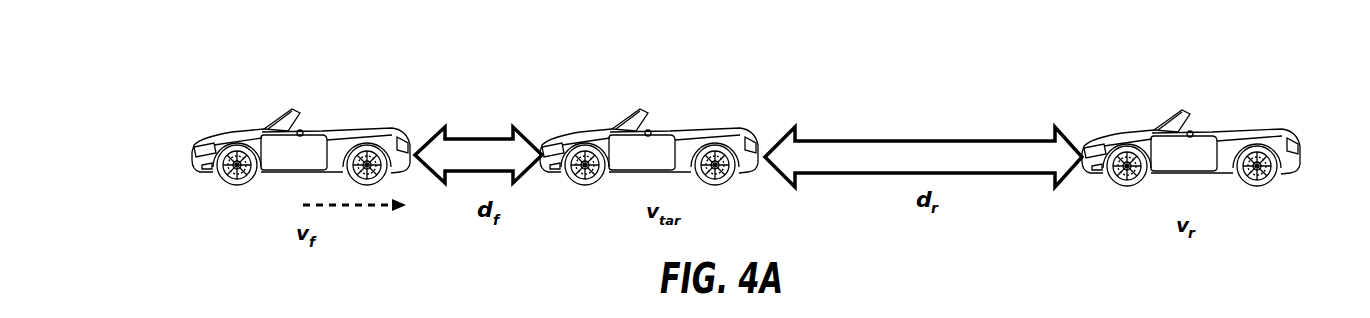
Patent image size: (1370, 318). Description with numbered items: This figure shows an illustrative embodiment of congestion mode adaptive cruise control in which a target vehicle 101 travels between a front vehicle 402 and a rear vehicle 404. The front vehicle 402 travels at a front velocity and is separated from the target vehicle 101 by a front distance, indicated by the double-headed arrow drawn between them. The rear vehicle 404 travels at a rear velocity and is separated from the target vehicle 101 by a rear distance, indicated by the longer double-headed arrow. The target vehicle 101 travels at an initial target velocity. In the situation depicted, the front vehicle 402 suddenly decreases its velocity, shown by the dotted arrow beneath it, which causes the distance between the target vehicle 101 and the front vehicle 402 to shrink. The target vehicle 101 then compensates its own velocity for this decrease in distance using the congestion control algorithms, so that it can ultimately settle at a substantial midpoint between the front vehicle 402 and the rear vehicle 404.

The front vehicle 402 is at (301, 121).
The target vehicle 101 is at (649, 121).
The rear vehicle 404 is at (1191, 129).